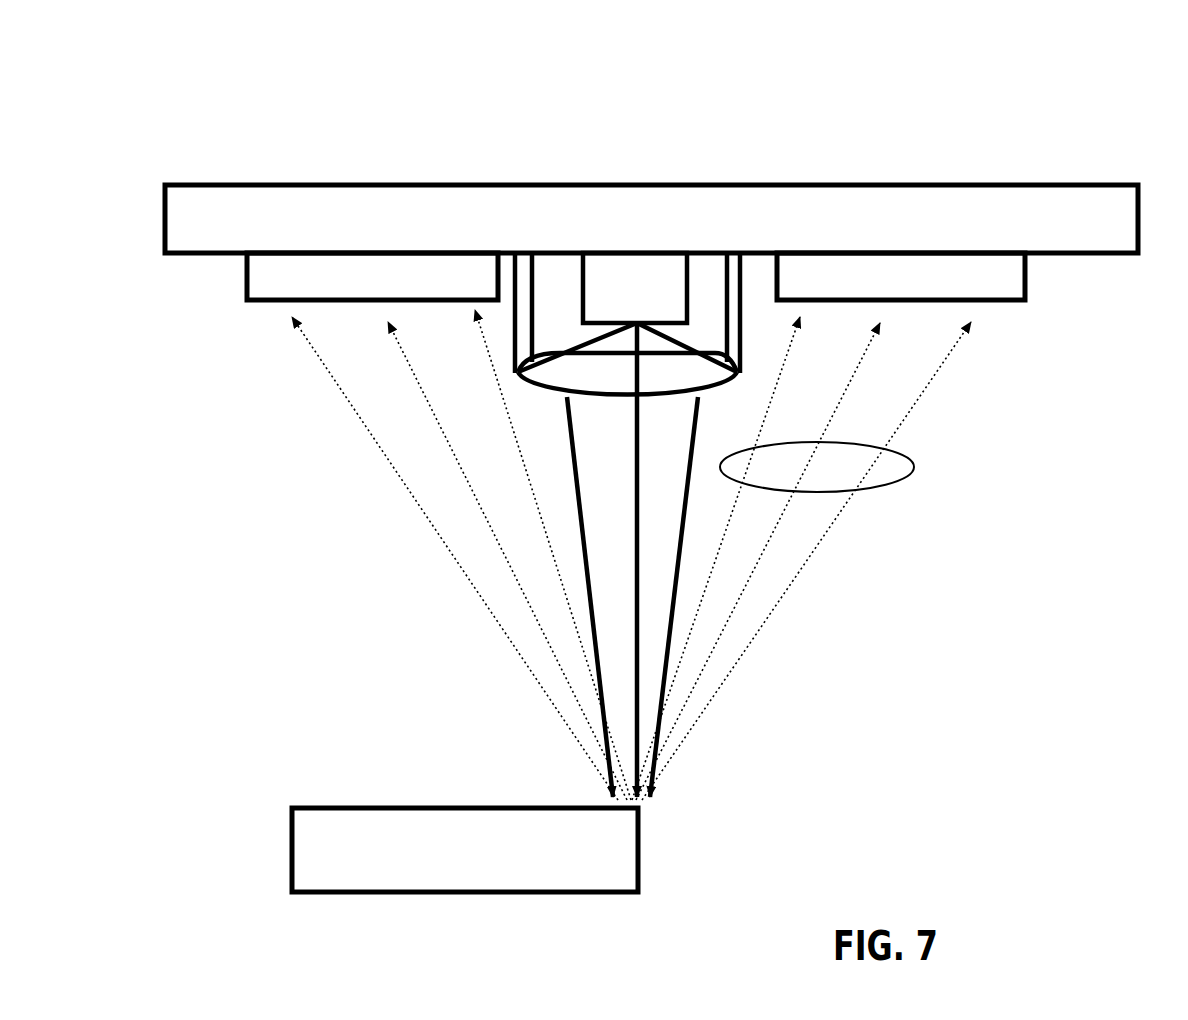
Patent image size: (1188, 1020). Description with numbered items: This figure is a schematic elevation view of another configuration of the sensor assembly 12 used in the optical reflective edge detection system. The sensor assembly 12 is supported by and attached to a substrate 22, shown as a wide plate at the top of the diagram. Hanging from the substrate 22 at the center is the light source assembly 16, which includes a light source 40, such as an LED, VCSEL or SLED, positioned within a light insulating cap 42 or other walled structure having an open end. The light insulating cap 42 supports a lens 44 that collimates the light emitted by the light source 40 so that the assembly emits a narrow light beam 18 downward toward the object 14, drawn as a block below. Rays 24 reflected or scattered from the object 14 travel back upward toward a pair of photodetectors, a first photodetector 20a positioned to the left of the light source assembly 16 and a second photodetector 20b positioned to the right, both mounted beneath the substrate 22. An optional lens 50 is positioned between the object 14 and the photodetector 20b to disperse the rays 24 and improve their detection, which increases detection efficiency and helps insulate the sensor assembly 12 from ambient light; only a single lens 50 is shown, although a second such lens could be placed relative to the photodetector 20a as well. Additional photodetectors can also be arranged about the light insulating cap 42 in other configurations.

The sensor assembly 12 is at (771, 348).
The object 14 is at (456, 796).
The light source assembly 16 is at (552, 290).
The narrow light beam 18 is at (630, 595).
The first photodetector 20a is at (325, 285).
The second photodetector 20b is at (931, 339).
The substrate 22 is at (903, 203).
The reflected rays 24 is at (527, 660).
The light source 40 is at (627, 282).
The light insulating cap 42 is at (523, 303).
The lens 44 is at (597, 373).
The lens 50 is at (845, 485).